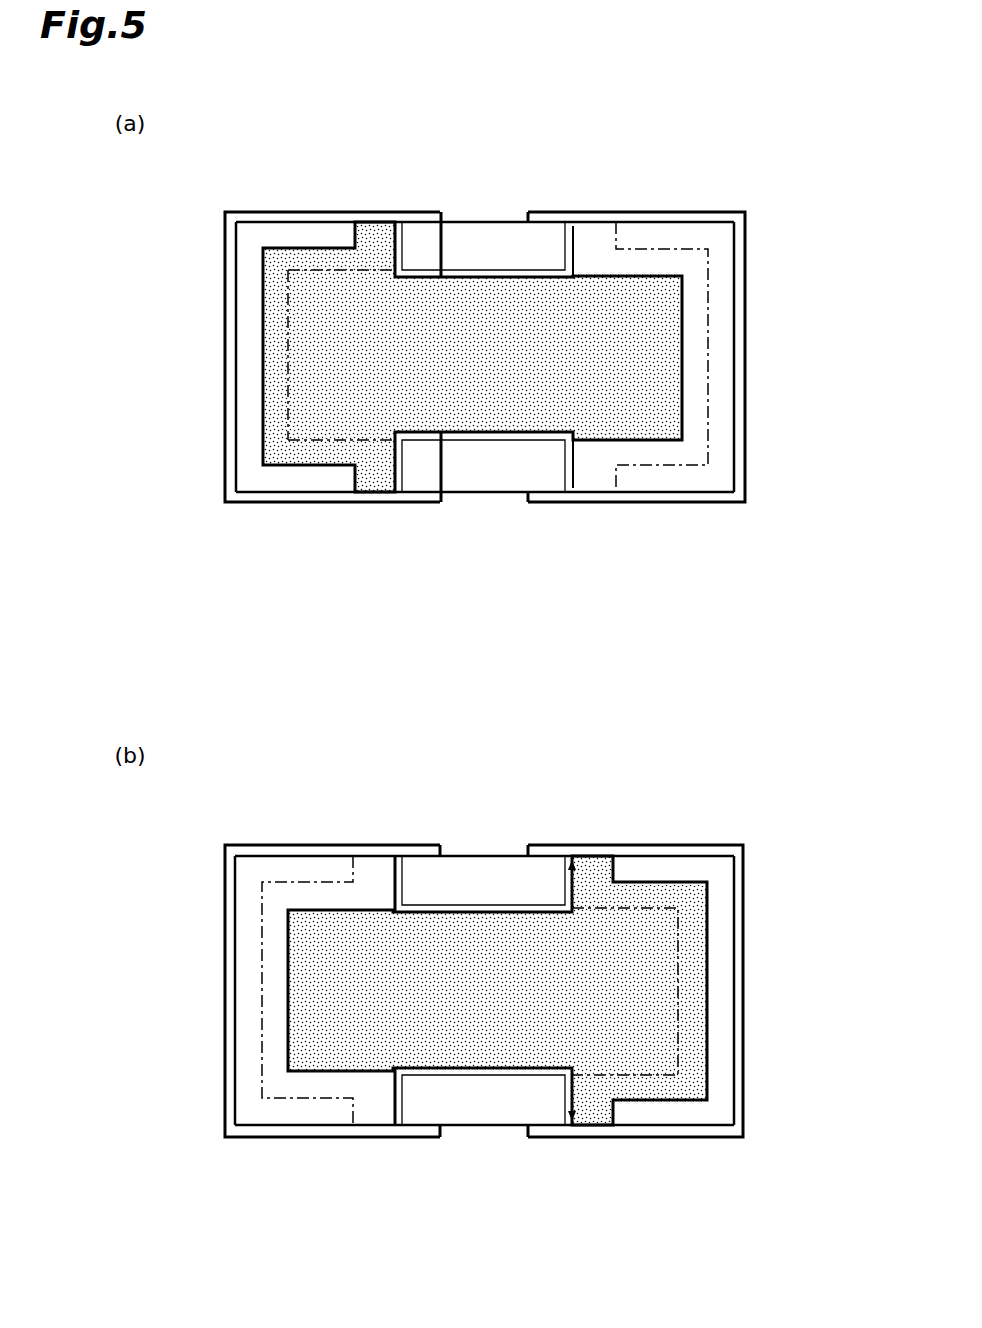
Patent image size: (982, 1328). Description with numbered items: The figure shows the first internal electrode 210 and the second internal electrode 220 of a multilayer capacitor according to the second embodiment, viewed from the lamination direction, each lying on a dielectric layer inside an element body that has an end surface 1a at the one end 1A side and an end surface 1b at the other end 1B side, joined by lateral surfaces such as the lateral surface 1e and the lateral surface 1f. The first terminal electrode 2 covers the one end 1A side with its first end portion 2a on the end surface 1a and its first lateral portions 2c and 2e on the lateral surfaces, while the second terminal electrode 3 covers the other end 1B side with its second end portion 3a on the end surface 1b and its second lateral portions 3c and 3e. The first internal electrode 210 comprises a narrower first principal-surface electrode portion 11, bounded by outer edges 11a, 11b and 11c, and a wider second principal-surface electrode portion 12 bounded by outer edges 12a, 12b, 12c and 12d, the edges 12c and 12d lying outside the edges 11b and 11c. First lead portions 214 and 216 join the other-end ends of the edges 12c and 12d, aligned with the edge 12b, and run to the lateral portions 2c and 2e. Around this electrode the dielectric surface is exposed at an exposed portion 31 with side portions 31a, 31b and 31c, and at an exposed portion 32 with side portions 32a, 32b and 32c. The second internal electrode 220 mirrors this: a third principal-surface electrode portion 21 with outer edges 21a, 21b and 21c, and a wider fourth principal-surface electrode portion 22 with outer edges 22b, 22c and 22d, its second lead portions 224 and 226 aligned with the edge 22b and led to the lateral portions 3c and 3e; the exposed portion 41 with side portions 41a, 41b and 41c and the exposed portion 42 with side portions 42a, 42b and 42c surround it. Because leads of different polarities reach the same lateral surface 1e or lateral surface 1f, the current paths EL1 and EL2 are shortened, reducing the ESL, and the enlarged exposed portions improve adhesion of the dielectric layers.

The end surface 1a is at (237, 383).
The end surface 1b is at (735, 385).
The lateral surface 1e is at (523, 494).
The lateral surface 1f is at (518, 220).
The one end 1A is at (205, 343).
The other end 1B is at (767, 344).
The first terminal electrode 2 is at (215, 227).
The second terminal electrode 3 is at (752, 229).
The first end portion 2a is at (233, 315).
The second end portion 3a is at (747, 315).
The first lateral portion 2c is at (341, 498).
The second lateral portion 3c is at (647, 498).
The first lateral portion 2e is at (351, 212).
The second lateral portion 3e is at (633, 218).
The first principal-surface electrode portion 11 is at (613, 337).
The second principal-surface electrode portion 12 is at (318, 317).
The outer edge 11a is at (682, 410).
The outer edge 11b is at (597, 442).
The outer edge 11c is at (583, 274).
The outer edge 12a is at (262, 414).
The outer edge 12b is at (418, 235).
The outer edge 12c is at (265, 465).
The outer edge 12d is at (268, 247).
The exposed portion 31 is at (248, 285).
The exposed portion 32 is at (722, 287).
The side portion 31a is at (252, 448).
The side portion 31b is at (307, 478).
The side portion 31c is at (307, 237).
The side portion 32a is at (725, 455).
The side portion 32b is at (478, 472).
The side portion 32c is at (477, 238).
The first internal electrode 210 is at (671, 263).
The first lead portion 214 is at (372, 486).
The first lead portion 216 is at (378, 232).
The current path EL1 is at (503, 436).
The current path EL2 is at (483, 282).
The third principal-surface electrode portion 21 is at (320, 944).
The fourth principal-surface electrode portion 22 is at (657, 935).
The outer edge 21a is at (285, 1065).
The outer edge 21b is at (375, 1072).
The outer edge 21c is at (368, 907).
The outer edge 22b is at (555, 885).
The outer edge 22c is at (706, 1068).
The outer edge 22d is at (682, 890).
The second internal electrode 220 is at (699, 868).
The second lead portion 224 is at (595, 1125).
The second lead portion 226 is at (593, 860).
The exposed portion 41 is at (725, 920).
The exposed portion 42 is at (245, 917).
The side portion 41a is at (710, 1060).
The side portion 41b is at (667, 1112).
The side portion 41c is at (630, 867).
The side portion 42a is at (272, 1037).
The side portion 42b is at (500, 1112).
The side portion 42c is at (498, 873).